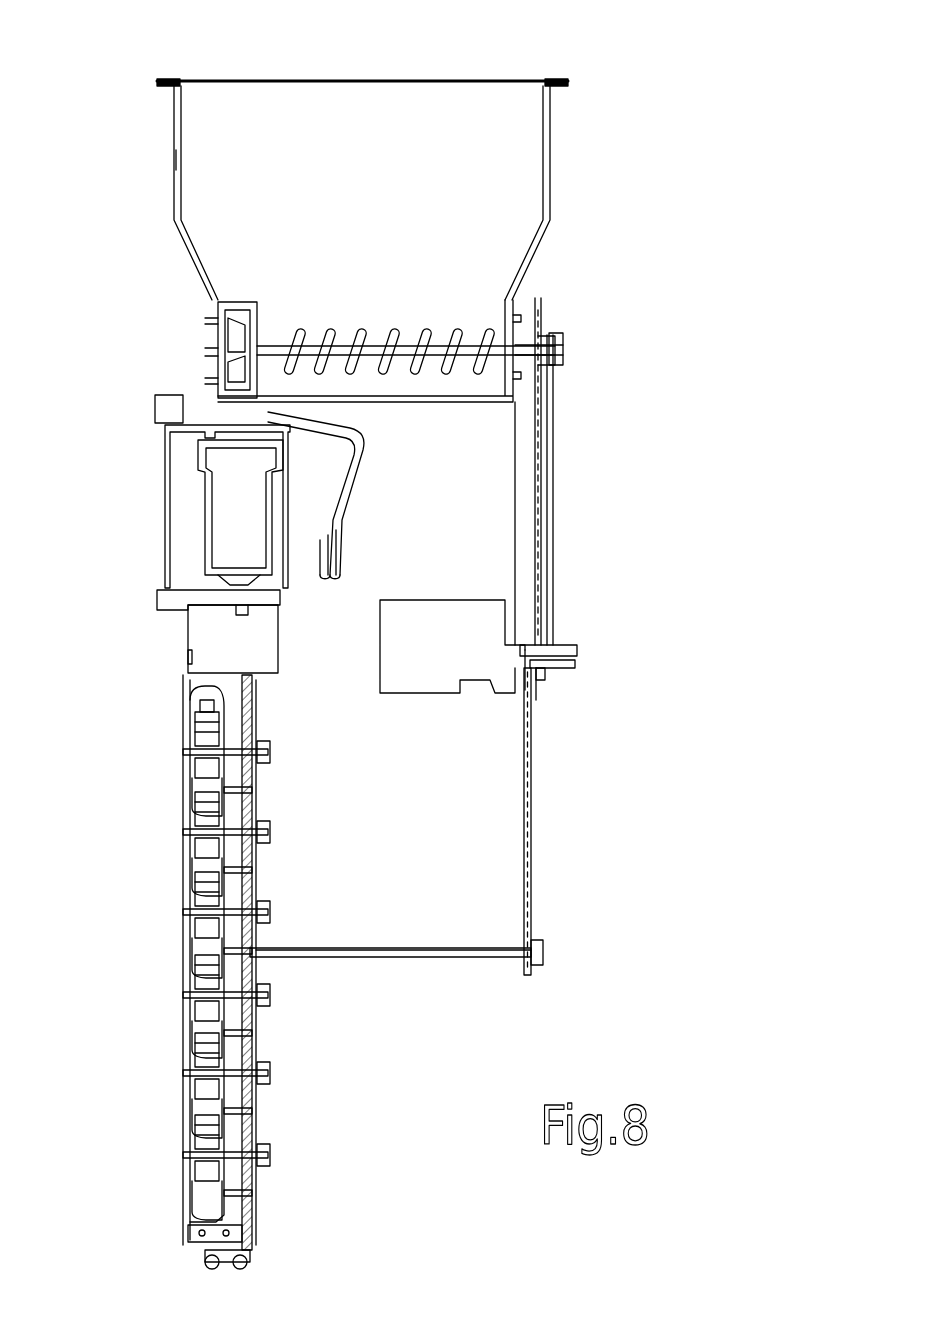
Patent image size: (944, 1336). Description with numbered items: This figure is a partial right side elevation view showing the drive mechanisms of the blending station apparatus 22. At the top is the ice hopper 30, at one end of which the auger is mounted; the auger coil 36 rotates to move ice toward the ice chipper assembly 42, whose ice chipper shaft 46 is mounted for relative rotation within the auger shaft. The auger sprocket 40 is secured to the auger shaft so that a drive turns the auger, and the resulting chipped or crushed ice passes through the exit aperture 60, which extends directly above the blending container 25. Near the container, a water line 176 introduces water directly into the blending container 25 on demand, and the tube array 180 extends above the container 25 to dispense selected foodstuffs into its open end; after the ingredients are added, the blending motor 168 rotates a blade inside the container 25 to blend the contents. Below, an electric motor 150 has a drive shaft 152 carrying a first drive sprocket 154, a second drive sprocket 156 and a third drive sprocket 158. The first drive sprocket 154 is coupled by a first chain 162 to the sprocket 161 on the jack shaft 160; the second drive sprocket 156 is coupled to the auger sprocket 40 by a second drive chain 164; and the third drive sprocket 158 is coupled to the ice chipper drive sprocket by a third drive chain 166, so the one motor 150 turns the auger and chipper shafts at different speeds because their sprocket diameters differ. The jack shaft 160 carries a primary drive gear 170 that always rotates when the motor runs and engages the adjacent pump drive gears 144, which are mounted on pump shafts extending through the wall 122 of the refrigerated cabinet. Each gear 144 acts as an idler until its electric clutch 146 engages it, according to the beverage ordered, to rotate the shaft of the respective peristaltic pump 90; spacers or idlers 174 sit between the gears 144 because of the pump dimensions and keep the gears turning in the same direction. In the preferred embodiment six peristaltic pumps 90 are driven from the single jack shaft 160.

The hopper 22 is at (445, 112).
The hopper 30 is at (563, 84).
The ice chipper assembly 42 is at (256, 300).
The coil 36 is at (350, 328).
The ice chipper shaft 46 is at (407, 330).
The auger sprocket 40 is at (542, 310).
The exit aperture 60 is at (240, 403).
The water line 176 is at (168, 428).
The tube array 180 is at (352, 488).
The second drive chain 164 is at (535, 496).
The third drive chain 166 is at (553, 450).
The blending container 25 is at (254, 523).
The first drive sprocket 154 is at (527, 645).
The electric motor 150 is at (457, 605).
The drive shaft 152 is at (577, 649).
The blending motor 168 is at (200, 629).
The wall 122 is at (186, 673).
The third drive sprocket 158 is at (545, 675).
The second drive sprocket 156 is at (539, 682).
The pump drive gear 144 is at (250, 728).
The clutch 146 is at (270, 750).
The spacer 174 is at (252, 788).
The peristaltic pump 90 is at (192, 785).
The primary drive gear 170 is at (300, 948).
The first chain 162 is at (531, 851).
The jack shaft 160 is at (457, 958).
The jack shaft sprocket 161 is at (532, 972).